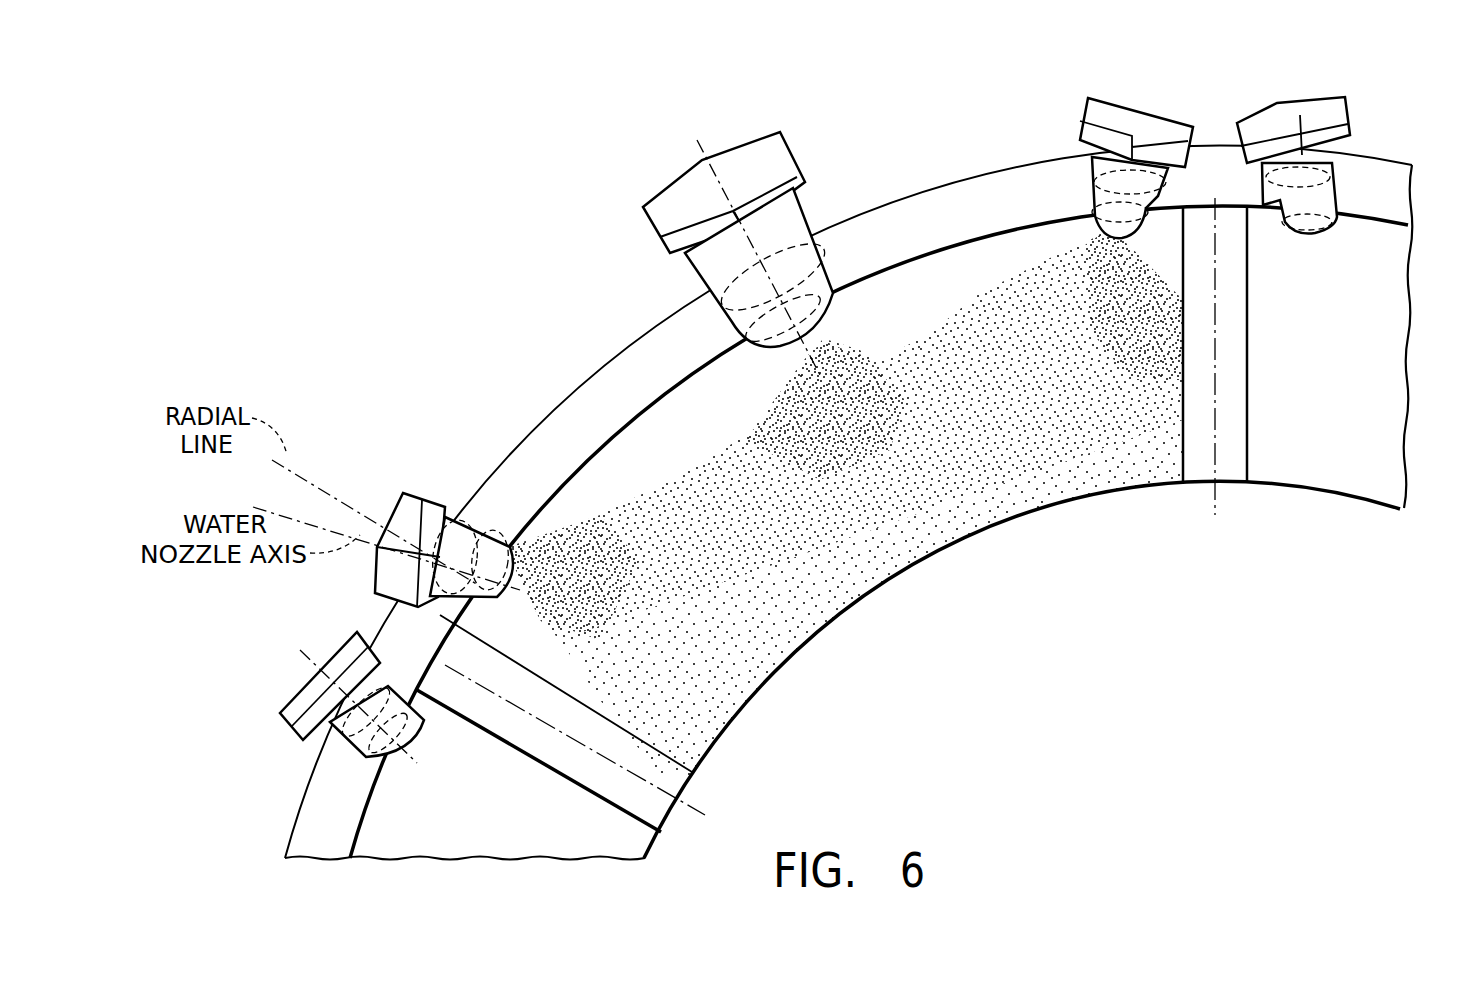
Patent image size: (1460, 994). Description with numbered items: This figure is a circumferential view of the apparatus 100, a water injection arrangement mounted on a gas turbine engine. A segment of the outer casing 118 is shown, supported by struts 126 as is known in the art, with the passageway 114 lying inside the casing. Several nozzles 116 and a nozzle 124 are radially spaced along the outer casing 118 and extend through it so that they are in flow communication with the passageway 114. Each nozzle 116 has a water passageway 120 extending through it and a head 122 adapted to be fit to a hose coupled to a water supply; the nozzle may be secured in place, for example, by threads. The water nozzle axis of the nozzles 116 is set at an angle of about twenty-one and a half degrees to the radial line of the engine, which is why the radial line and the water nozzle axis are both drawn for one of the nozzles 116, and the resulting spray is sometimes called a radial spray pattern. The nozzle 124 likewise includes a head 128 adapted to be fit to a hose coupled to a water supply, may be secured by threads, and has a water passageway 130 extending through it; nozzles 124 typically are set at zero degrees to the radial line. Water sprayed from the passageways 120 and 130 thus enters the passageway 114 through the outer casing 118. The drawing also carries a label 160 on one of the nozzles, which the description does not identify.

The apparatus 100 is at (937, 126).
The passageway 114 is at (645, 410).
The nozzle 116 is at (398, 496).
The outer casing 118 is at (577, 392).
The water passageway 120 is at (492, 522).
The head 122 is at (440, 503).
The nozzle 124 is at (751, 146).
The strut 126 is at (1247, 393).
The head 128 is at (808, 176).
The water passageway 130 is at (705, 285).
The second water nozzle 160 is at (370, 650).